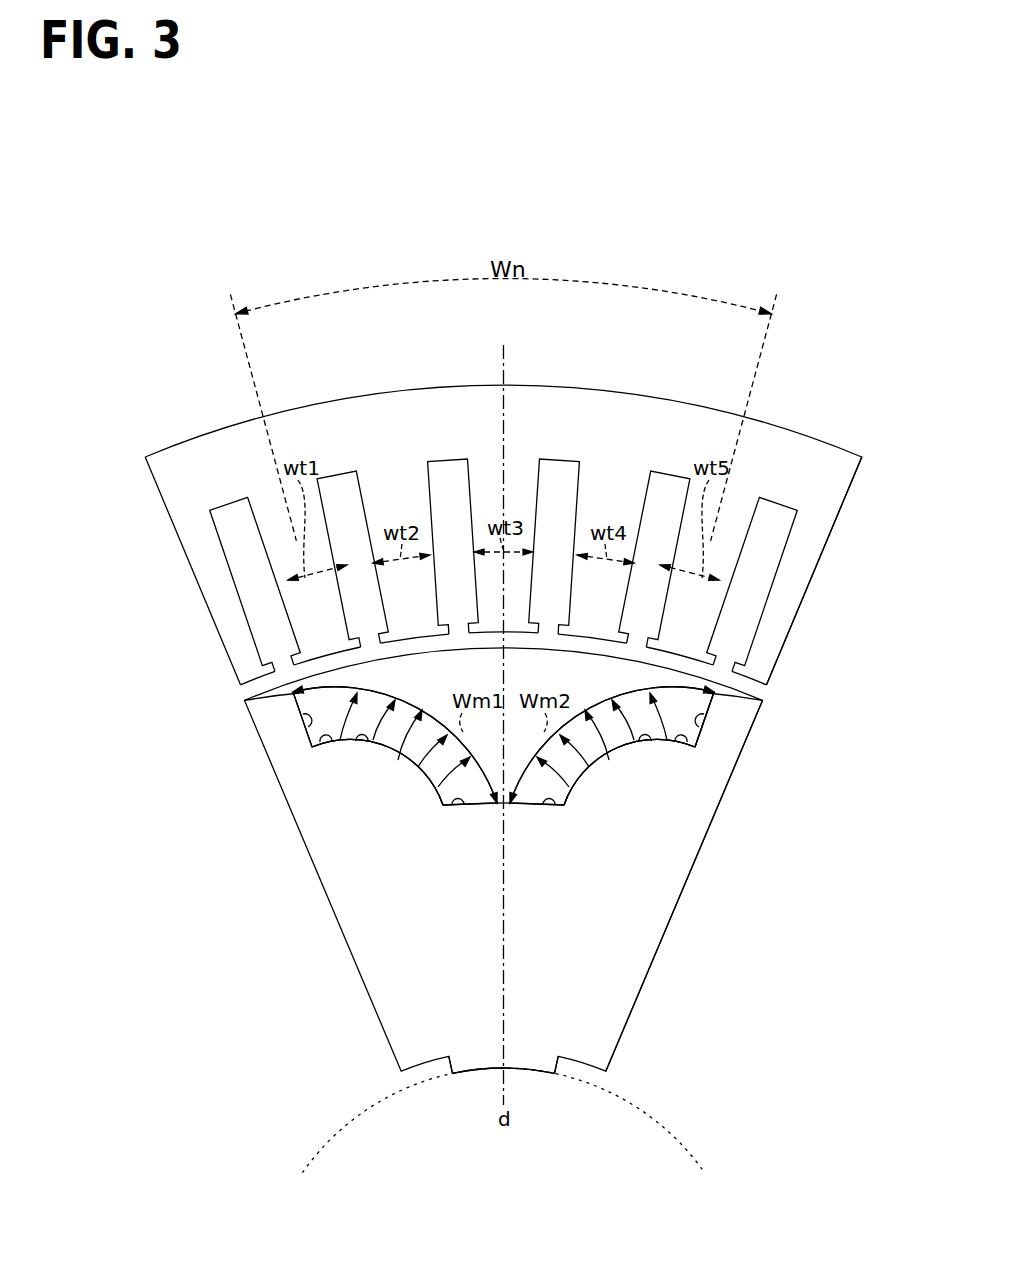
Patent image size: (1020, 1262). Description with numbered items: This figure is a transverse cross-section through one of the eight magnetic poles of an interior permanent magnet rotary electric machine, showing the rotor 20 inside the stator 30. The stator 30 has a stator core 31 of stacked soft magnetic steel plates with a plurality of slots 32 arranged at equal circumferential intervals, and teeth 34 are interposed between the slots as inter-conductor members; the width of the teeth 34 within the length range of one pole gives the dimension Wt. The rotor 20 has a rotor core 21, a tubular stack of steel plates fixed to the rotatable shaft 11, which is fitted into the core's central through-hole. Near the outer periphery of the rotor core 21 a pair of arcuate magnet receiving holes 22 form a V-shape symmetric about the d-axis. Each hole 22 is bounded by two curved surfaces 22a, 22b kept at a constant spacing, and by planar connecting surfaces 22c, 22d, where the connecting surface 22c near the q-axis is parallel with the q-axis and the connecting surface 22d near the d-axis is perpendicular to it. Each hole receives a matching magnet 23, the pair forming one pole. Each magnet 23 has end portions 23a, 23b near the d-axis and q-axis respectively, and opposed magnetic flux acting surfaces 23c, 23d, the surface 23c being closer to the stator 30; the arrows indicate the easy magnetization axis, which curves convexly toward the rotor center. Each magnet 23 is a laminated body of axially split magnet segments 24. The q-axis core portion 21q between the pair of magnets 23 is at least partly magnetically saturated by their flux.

The rotatable shaft 11 is at (713, 1122).
The rotor 20 is at (368, 999).
The rotor core 21 is at (648, 969).
The q-axis core portion 21q is at (272, 723).
The magnet receiving hole 22 is at (314, 750).
The curved surface 22a is at (414, 763).
The curved surface 22b is at (362, 745).
The connecting surface 22c is at (304, 730).
The connecting surface 22d is at (455, 810).
The magnet 23 is at (440, 804).
The end portion 23a is at (527, 808).
The end portion 23b is at (708, 748).
The magnetic flux acting surface 23c is at (392, 690).
The magnetic flux acting surface 23d is at (389, 757).
The magnet segment 24 is at (536, 1077).
The stator 30 is at (189, 439).
The stator core 31 is at (836, 523).
The slot 32 is at (247, 517).
The tooth 34 is at (413, 487).